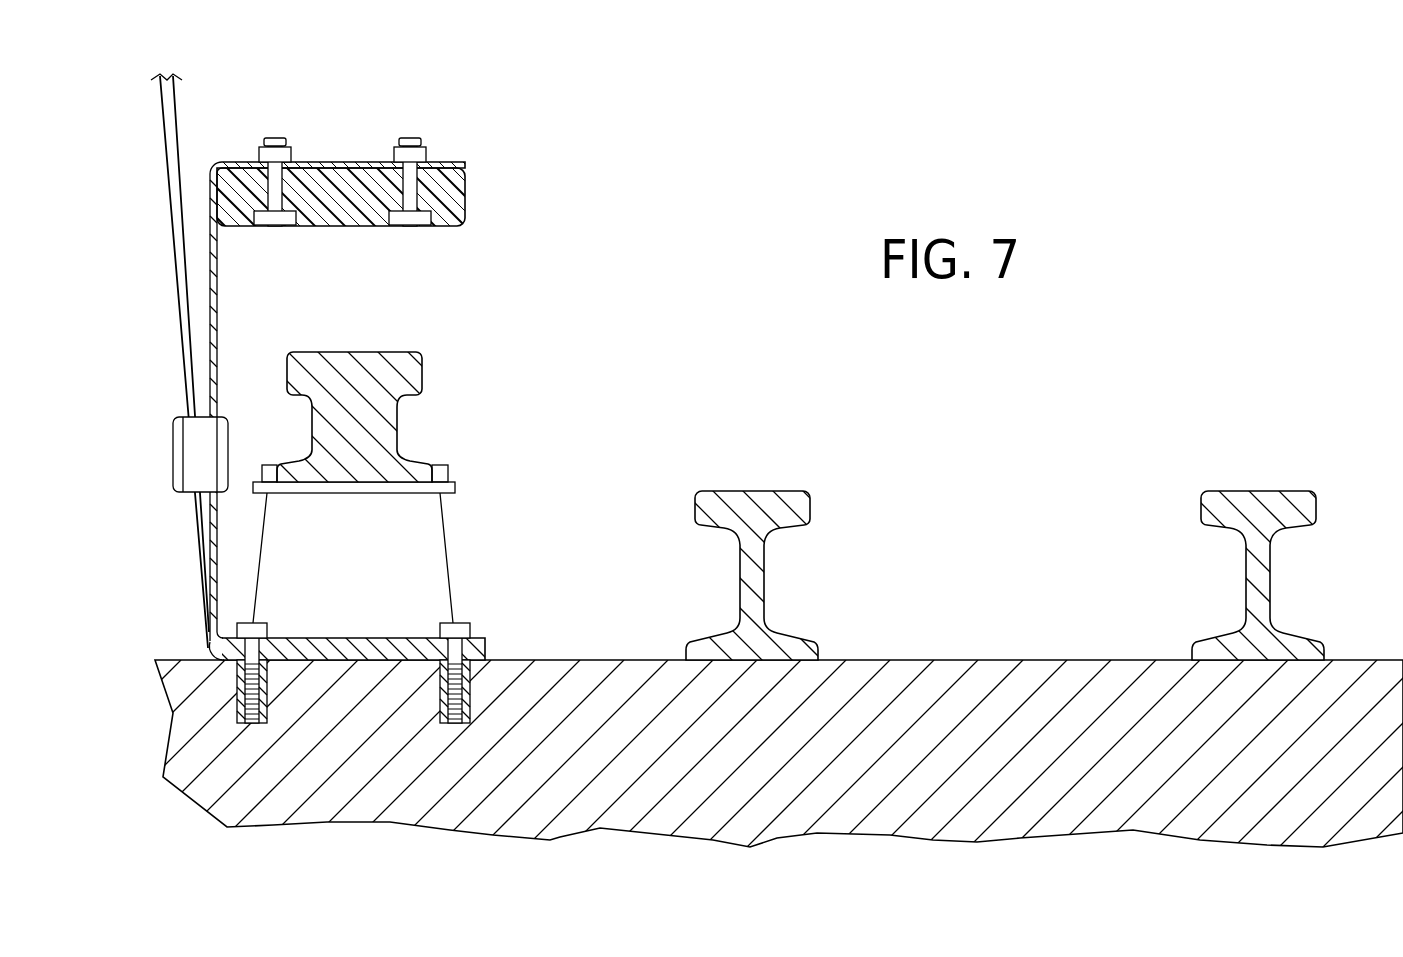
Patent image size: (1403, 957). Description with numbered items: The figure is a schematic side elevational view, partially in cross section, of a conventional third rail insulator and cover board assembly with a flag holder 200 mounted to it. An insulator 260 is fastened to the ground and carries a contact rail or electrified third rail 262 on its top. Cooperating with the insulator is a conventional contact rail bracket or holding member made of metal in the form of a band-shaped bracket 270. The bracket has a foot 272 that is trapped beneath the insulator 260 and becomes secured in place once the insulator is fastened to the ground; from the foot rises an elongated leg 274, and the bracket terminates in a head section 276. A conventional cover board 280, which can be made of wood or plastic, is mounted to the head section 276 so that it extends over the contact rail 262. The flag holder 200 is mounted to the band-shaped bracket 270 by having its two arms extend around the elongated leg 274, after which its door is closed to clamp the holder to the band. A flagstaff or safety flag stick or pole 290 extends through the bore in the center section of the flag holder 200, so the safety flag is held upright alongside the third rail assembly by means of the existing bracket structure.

The flag holder 200 is at (166, 467).
The insulator 260 is at (433, 548).
The contact rail 262 is at (430, 352).
The band-shaped bracket 270 is at (367, 391).
The foot 272 is at (493, 657).
The elongated leg 274 is at (216, 290).
The head section 276 is at (453, 160).
The cover board 280 is at (465, 197).
The flagstaff 290 is at (168, 116).